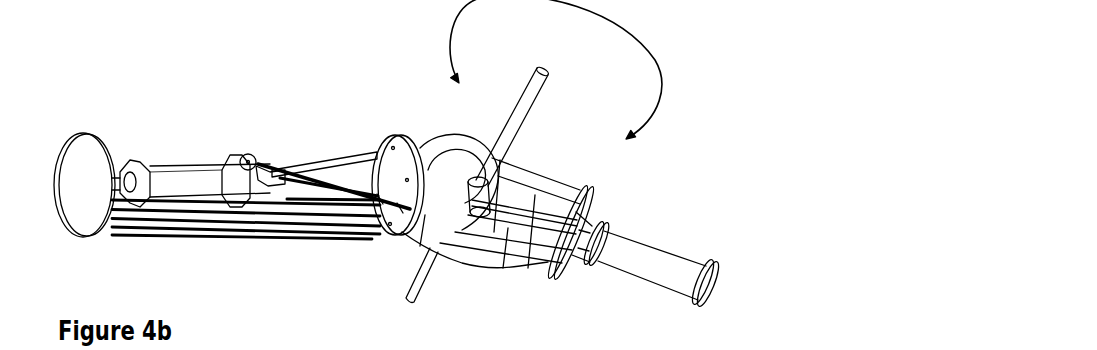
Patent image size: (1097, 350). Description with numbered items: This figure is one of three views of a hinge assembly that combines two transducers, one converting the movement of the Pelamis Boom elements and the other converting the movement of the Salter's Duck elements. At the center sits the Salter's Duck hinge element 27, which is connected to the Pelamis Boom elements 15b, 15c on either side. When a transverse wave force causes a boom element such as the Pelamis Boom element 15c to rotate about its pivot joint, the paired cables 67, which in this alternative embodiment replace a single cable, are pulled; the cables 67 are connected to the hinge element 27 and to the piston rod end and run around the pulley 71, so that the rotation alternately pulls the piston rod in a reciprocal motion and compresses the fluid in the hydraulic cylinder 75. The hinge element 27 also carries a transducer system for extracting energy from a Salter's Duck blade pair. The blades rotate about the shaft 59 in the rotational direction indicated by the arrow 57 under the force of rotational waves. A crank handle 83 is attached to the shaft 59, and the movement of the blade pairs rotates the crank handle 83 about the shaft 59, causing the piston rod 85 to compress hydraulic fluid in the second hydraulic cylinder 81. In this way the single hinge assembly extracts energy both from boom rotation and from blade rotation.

The Pelamis Boom element 15b is at (229, 203).
The Pelamis Boom element 15c is at (730, 272).
The Salter's Duck hinge element 27 is at (497, 273).
The arrow 57 is at (631, 33).
The shaft 59 is at (549, 71).
The cable 67 is at (328, 160).
The pulley 71 is at (249, 166).
The hydraulic cylinder 75 is at (179, 183).
The hydraulic cylinder 81 is at (651, 266).
The crank handle 83 is at (465, 192).
The piston rod 85 is at (516, 216).